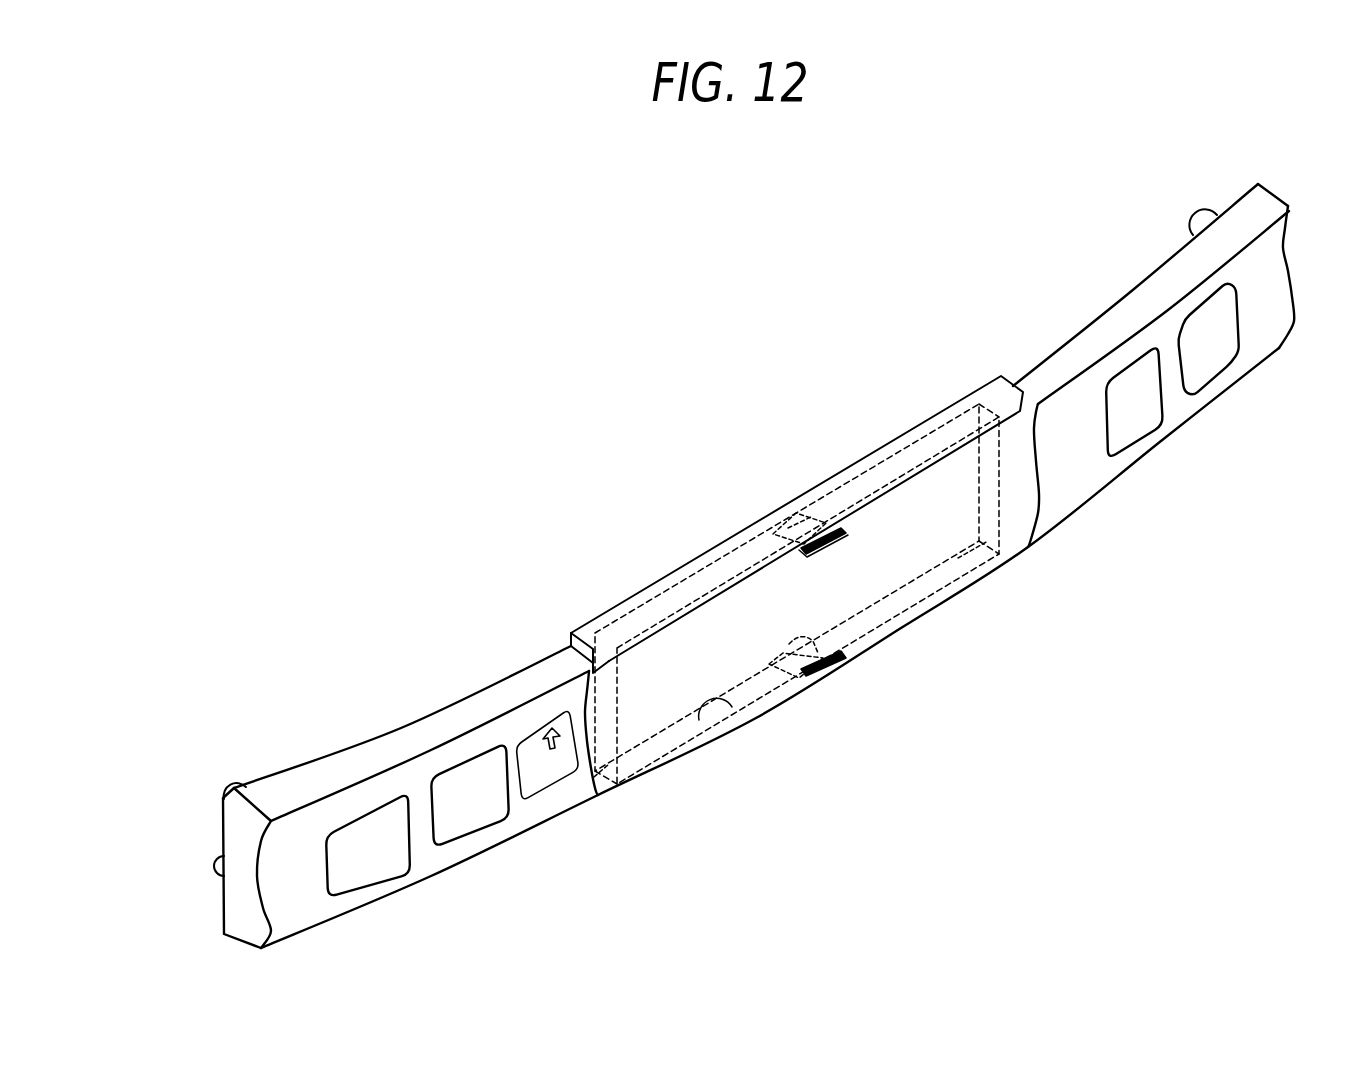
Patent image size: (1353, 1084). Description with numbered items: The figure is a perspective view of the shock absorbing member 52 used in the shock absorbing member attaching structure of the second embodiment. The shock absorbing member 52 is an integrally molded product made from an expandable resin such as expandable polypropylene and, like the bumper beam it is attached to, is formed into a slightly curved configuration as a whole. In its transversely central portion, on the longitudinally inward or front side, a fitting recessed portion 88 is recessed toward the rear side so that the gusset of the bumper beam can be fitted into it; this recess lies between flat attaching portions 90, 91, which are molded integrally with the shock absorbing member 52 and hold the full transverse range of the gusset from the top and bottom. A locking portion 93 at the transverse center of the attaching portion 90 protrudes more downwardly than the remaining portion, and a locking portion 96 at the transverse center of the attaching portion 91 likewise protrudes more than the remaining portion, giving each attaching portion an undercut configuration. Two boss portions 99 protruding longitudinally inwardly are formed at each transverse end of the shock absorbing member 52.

The shock absorbing member 52 is at (362, 722).
The boss portion 99 is at (232, 787).
The attaching portion 90 is at (678, 597).
The locking portion 93 is at (780, 540).
The locking portion 96 is at (785, 649).
The attaching portion 91 is at (735, 709).
The fitting recessed portion 88 is at (940, 586).